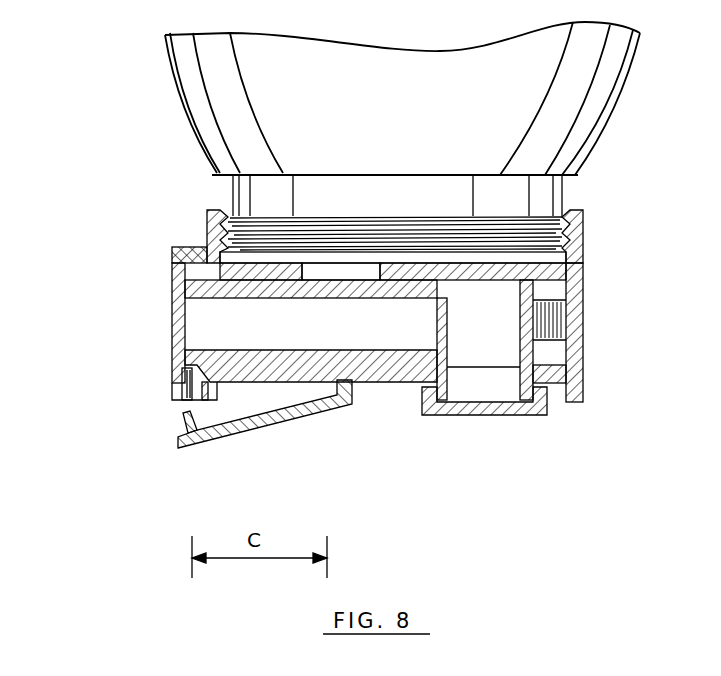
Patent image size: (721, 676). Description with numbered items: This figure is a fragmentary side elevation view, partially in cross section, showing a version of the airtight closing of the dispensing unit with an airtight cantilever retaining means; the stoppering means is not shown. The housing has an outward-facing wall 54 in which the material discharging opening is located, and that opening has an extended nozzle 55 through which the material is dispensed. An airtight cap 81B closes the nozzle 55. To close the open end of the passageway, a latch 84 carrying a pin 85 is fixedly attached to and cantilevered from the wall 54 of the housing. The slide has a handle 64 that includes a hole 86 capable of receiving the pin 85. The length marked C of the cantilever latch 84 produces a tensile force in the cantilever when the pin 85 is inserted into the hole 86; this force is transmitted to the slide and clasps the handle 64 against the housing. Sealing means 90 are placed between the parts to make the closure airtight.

The handle 64 is at (312, 223).
The sealing means 90 is at (172, 348).
The hole 86 is at (128, 396).
The pin 85 is at (118, 440).
The latch 84 is at (265, 440).
The wall 54 is at (311, 425).
The nozzle 55 is at (478, 400).
The airtight cap 81B is at (523, 445).